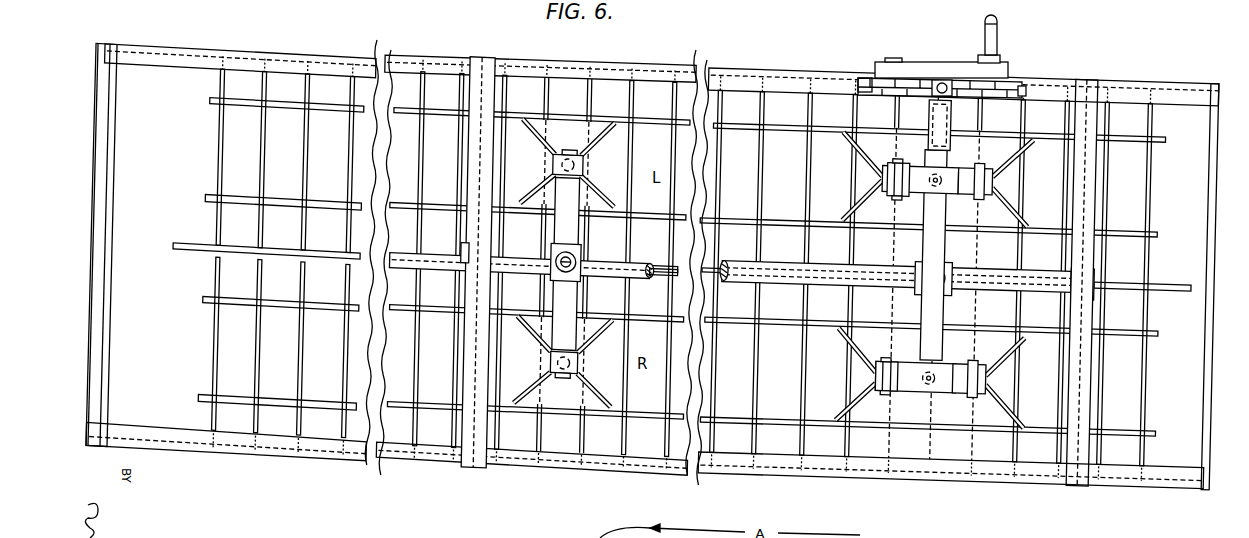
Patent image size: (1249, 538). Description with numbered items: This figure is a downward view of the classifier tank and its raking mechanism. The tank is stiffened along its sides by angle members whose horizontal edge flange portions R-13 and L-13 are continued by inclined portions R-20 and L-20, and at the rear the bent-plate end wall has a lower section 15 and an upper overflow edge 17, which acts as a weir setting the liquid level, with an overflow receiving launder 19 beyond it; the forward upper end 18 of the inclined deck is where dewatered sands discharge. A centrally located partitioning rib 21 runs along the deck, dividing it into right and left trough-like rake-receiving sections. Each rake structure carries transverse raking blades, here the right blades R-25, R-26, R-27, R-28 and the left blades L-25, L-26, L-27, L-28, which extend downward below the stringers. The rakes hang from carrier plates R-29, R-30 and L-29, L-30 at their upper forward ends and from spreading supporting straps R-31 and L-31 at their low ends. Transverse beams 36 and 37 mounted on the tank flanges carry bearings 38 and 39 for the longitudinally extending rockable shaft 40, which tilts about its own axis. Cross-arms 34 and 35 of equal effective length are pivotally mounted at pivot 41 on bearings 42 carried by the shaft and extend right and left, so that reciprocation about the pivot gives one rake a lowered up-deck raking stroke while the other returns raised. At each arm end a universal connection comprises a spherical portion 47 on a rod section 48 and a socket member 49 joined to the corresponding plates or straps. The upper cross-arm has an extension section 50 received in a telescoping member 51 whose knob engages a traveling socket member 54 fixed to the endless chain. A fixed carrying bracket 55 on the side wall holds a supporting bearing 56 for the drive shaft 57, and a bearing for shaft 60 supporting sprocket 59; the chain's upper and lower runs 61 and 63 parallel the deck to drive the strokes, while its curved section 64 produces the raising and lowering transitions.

The edge flange portion of left side wall L-13 is at (300, 50).
The edge flange portion of right side wall R-13 is at (313, 446).
The lower section of end wall 15 is at (92, 224).
The upper overflow edge 17 is at (113, 233).
The forward upper end of inclined deck 18 is at (1201, 287).
The overflow receiving launder 19 is at (103, 266).
The inclined flange portion of left side wall L-20 is at (742, 80).
The inclined flange portion of right side wall R-20 is at (902, 470).
The partitioning rib 21 is at (195, 257).
The transverse raking blade L-25 is at (218, 136).
The transverse raking blade L-26 is at (263, 138).
The transverse raking blade L-27 is at (303, 139).
The transverse raking blade L-28 is at (348, 143).
The transverse raking blade R-25 is at (212, 316).
The transverse raking blade R-26 is at (253, 319).
The transverse raking blade R-27 is at (300, 321).
The transverse raking blade R-28 is at (340, 321).
The carrier plate L-29 is at (1006, 131).
The carrier plate L-30 is at (1008, 213).
The carrier plate R-29 is at (1003, 397).
The carrier plate R-30 is at (1022, 352).
The spreading supporting strap L-31 is at (604, 190).
The spreading supporting strap R-31 is at (613, 377).
The upper cross-arm 34 is at (928, 237).
The cross-arm 35 is at (571, 234).
The transverse beam 36 is at (495, 80).
The transverse beam 37 is at (1088, 195).
The bearing 38 is at (537, 262).
The bearing 39 is at (1093, 273).
The rockable shaft 40 is at (520, 255).
The pivot 41 is at (573, 273).
The bearing 42 is at (547, 272).
The spherical portion 47 is at (567, 152).
The rod section 48 is at (940, 364).
The socket member 49 is at (965, 168).
The extension section 50 is at (928, 161).
The telescoping member 51 is at (928, 119).
The traveling socket member 54 is at (944, 82).
The fixed carrying bracket 55 is at (933, 61).
The supporting bearing 56 is at (1003, 62).
The drive shaft 57 is at (998, 28).
The spur gear or sprocket 59 is at (730, 531).
The shaft 60 is at (885, 57).
The upper run of chain 61 is at (915, 85).
The lower run of chain 63 is at (856, 86).
The curved section of chain 64 is at (1027, 92).